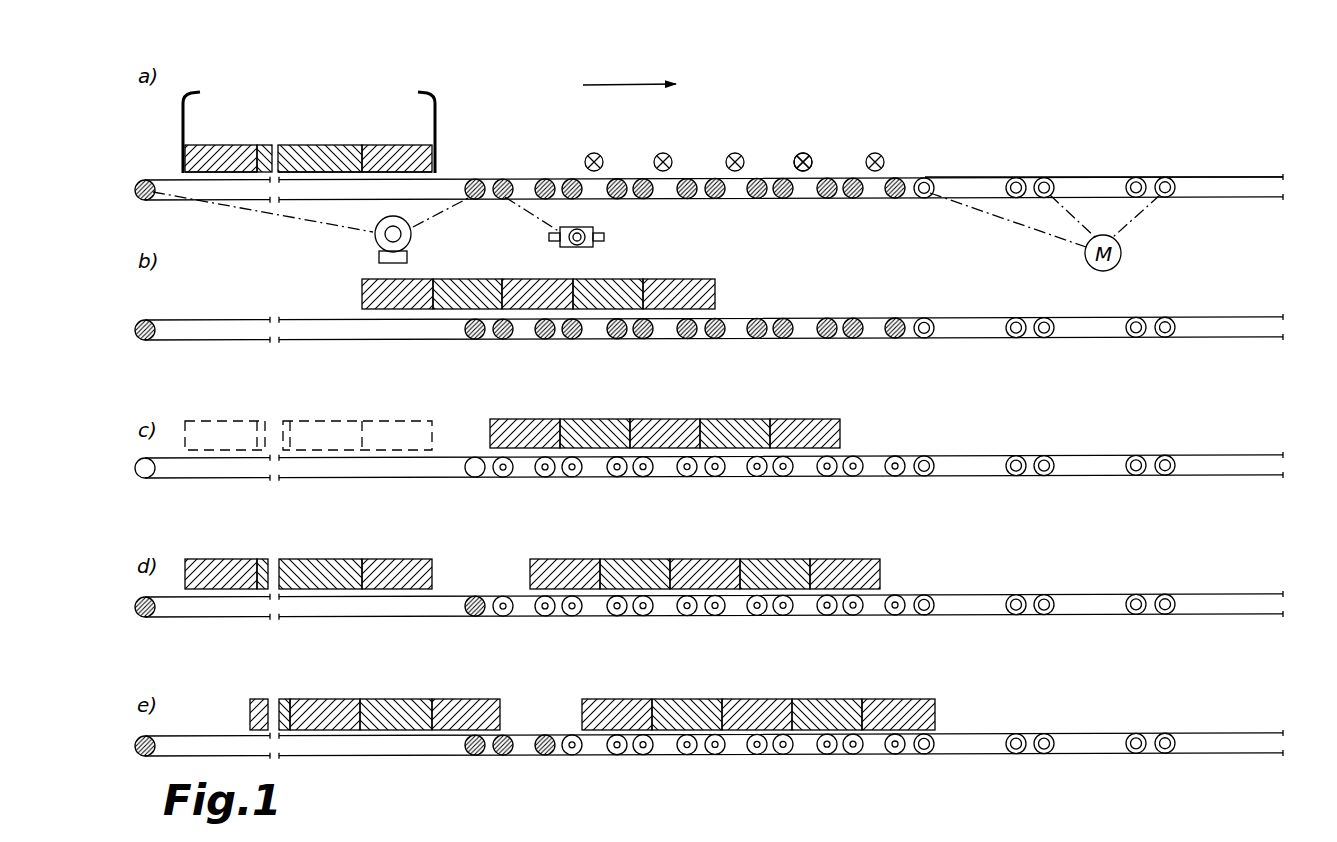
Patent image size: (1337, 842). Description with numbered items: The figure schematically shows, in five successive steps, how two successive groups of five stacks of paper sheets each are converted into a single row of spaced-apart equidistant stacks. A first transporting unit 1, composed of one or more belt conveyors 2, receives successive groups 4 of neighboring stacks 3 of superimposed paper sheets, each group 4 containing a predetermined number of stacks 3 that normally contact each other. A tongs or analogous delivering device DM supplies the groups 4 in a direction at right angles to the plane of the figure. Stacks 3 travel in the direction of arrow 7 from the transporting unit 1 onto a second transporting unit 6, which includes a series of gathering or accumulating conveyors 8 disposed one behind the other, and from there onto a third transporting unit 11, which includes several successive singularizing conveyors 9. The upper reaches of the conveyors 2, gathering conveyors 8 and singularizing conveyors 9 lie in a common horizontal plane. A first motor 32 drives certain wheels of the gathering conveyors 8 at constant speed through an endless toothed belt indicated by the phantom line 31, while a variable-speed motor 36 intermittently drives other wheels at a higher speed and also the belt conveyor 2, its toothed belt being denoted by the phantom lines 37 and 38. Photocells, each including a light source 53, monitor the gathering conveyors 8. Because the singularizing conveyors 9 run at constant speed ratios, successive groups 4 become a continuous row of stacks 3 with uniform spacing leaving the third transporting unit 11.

The first transporting unit 1 is at (351, 121).
The belt conveyor 2 is at (160, 180).
The stack 3 is at (235, 145).
The group of stacks 4 is at (320, 143).
The second transporting unit 6 is at (718, 141).
The arrow 7 is at (583, 85).
The gathering conveyor 8 is at (527, 180).
The singularizing conveyor 9 is at (957, 178).
The third transporting unit 11 is at (1074, 137).
The phantom line 31 is at (560, 228).
The first motor 32 is at (590, 248).
The variable-speed motor 36 is at (375, 238).
The phantom line 37 is at (413, 232).
The phantom line 38 is at (263, 213).
The light source 53 is at (740, 153).
The delivering device DM is at (424, 88).